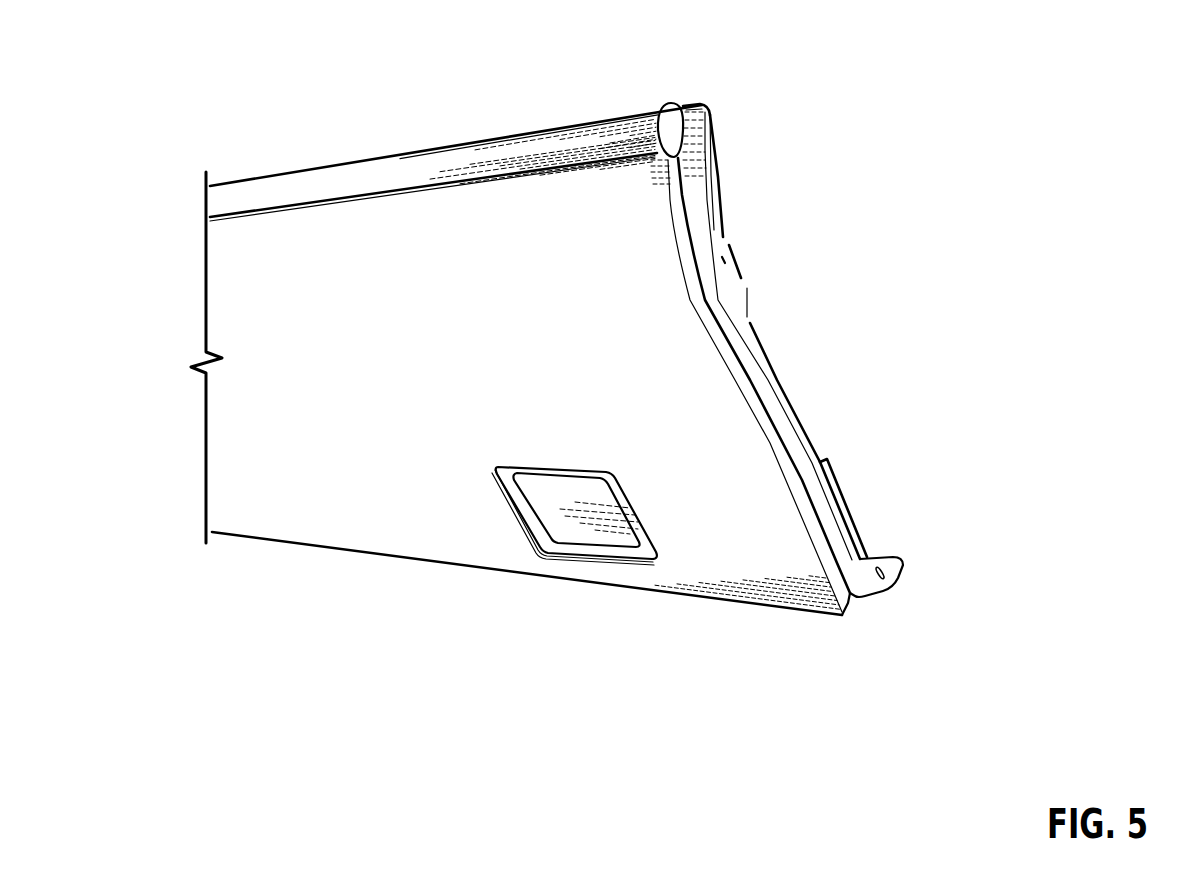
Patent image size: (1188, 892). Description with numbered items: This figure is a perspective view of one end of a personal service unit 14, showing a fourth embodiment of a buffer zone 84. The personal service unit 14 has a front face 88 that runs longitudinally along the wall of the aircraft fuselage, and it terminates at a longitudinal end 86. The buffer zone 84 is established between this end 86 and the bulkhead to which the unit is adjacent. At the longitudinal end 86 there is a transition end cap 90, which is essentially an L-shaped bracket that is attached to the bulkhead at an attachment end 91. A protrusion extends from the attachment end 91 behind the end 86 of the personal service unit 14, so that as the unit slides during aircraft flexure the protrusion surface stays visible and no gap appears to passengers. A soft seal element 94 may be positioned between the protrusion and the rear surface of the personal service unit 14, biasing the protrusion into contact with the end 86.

The personal service unit 14 is at (491, 359).
The buffer zone 84 is at (398, 220).
The longitudinal end 86 is at (672, 207).
The front face 88 is at (372, 537).
The transition end cap 90 is at (693, 118).
The attachment end 91 is at (740, 287).
The soft seal element 94 is at (713, 238).